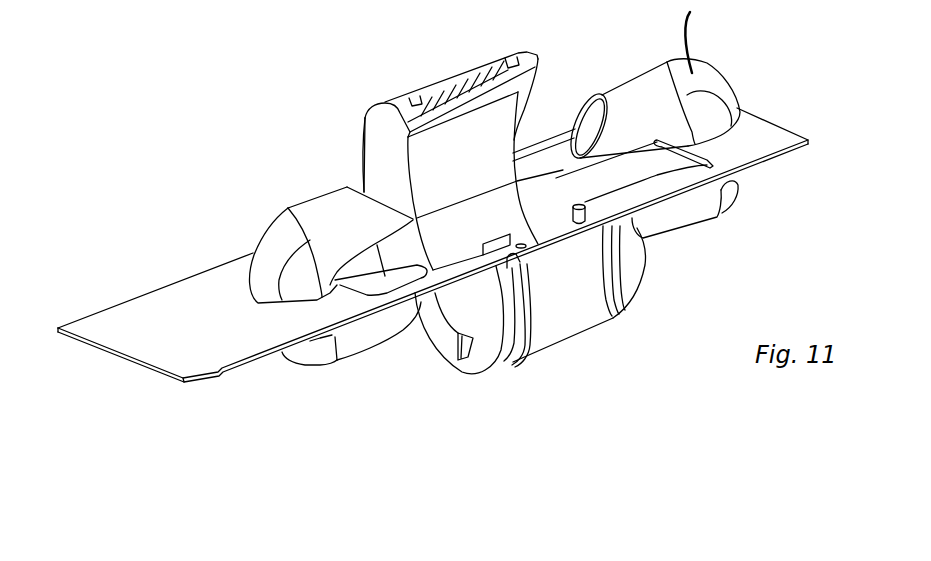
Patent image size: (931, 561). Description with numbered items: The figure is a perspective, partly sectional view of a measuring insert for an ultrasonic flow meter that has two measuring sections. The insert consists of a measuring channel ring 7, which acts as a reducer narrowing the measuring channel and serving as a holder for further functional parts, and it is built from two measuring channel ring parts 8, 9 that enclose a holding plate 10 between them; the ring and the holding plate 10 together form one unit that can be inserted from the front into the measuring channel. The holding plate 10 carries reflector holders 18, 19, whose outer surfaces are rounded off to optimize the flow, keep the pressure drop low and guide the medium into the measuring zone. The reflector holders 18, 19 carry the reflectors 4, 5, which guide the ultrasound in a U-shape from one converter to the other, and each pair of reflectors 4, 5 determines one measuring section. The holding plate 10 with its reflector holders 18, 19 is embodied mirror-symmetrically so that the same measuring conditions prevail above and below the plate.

The reflector 4 is at (378, 197).
The reflector 5 is at (593, 117).
The measuring channel ring 7 is at (365, 142).
The measuring channel ring part 8 is at (370, 162).
The measuring channel ring part 9 is at (438, 343).
The holding plate 10 is at (760, 126).
The reflector holder 18 is at (280, 240).
The reflector holder 19 is at (717, 201).